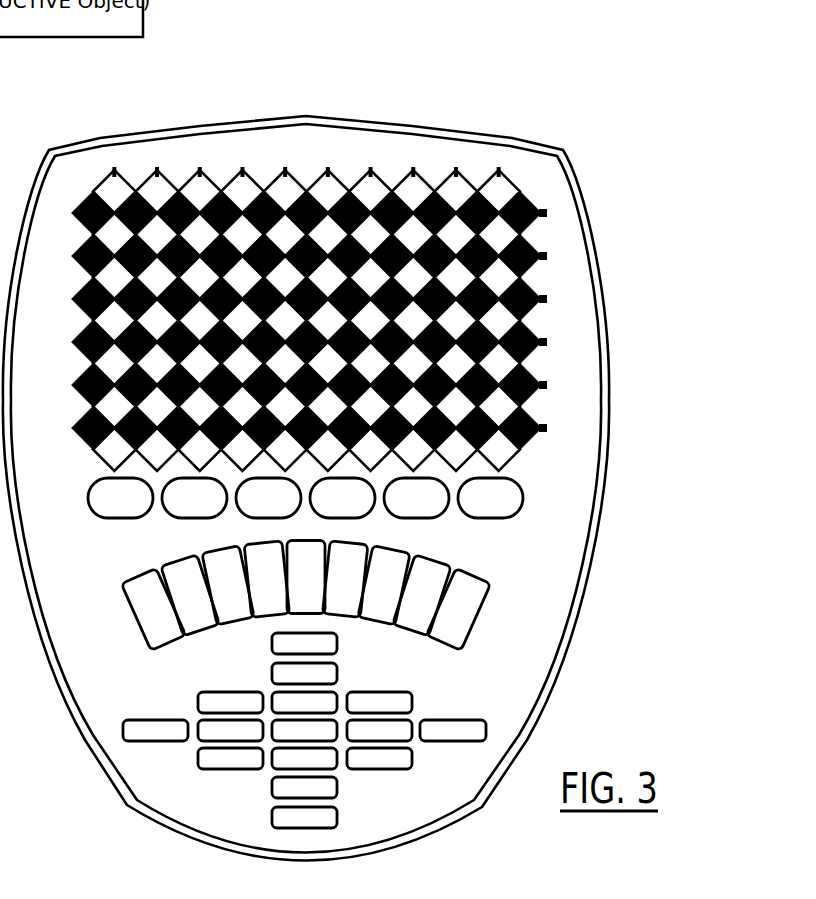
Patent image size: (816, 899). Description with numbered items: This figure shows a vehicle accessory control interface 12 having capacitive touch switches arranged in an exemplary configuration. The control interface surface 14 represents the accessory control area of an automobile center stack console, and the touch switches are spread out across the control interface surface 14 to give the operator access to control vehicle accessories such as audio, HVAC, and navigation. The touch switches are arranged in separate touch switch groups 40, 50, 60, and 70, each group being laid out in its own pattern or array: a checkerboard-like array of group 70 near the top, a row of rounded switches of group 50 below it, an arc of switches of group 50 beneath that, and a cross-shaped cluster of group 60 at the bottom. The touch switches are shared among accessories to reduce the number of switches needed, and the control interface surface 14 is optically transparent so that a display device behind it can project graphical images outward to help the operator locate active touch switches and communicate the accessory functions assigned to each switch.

The control interface 12 is at (480, 84).
The control interface surface 14 is at (603, 247).
The touch switch group 40 is at (550, 472).
The touch switch group 50 is at (513, 580).
The touch switch group 60 is at (465, 696).
The touch switch group 70 is at (545, 178).